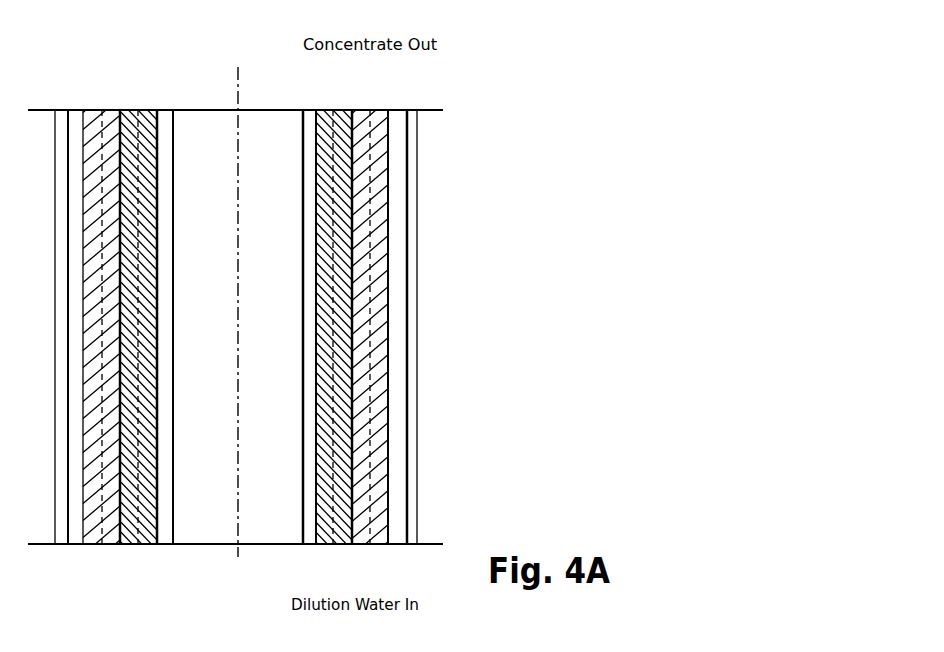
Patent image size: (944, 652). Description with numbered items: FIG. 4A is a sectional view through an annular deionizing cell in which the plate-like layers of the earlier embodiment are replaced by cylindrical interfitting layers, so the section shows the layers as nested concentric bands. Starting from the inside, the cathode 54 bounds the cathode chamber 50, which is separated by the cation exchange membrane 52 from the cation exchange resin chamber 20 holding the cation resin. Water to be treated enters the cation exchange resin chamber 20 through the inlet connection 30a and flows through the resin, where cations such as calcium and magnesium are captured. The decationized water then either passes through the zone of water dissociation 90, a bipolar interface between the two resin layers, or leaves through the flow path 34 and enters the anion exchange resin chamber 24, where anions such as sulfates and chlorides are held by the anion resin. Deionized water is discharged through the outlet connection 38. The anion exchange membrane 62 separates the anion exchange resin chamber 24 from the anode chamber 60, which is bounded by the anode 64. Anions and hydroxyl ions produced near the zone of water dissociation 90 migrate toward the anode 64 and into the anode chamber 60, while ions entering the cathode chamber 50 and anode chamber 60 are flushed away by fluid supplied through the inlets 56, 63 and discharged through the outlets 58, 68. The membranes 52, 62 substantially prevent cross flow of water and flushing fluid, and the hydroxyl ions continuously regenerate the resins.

The outlet connection 38 is at (102, 108).
The inlet connection 30a is at (138, 100).
The flow path 34 is at (136, 549).
The cathode chamber outlet 58 is at (309, 108).
The anode chamber outlet 68 is at (397, 108).
The cathode chamber inlet 56 is at (308, 553).
The anode chamber inlet 63 is at (394, 553).
The anode 64 is at (407, 155).
The anode chamber 60 is at (398, 186).
The anion exchange membrane 62 is at (390, 238).
The anion exchange resin chamber 24 is at (377, 290).
The zone of water dissociation 90 is at (353, 317).
The cation exchange resin chamber 20 is at (345, 363).
The cation exchange membrane 52 is at (318, 400).
The cathode chamber 50 is at (308, 450).
The cathode 54 is at (302, 475).